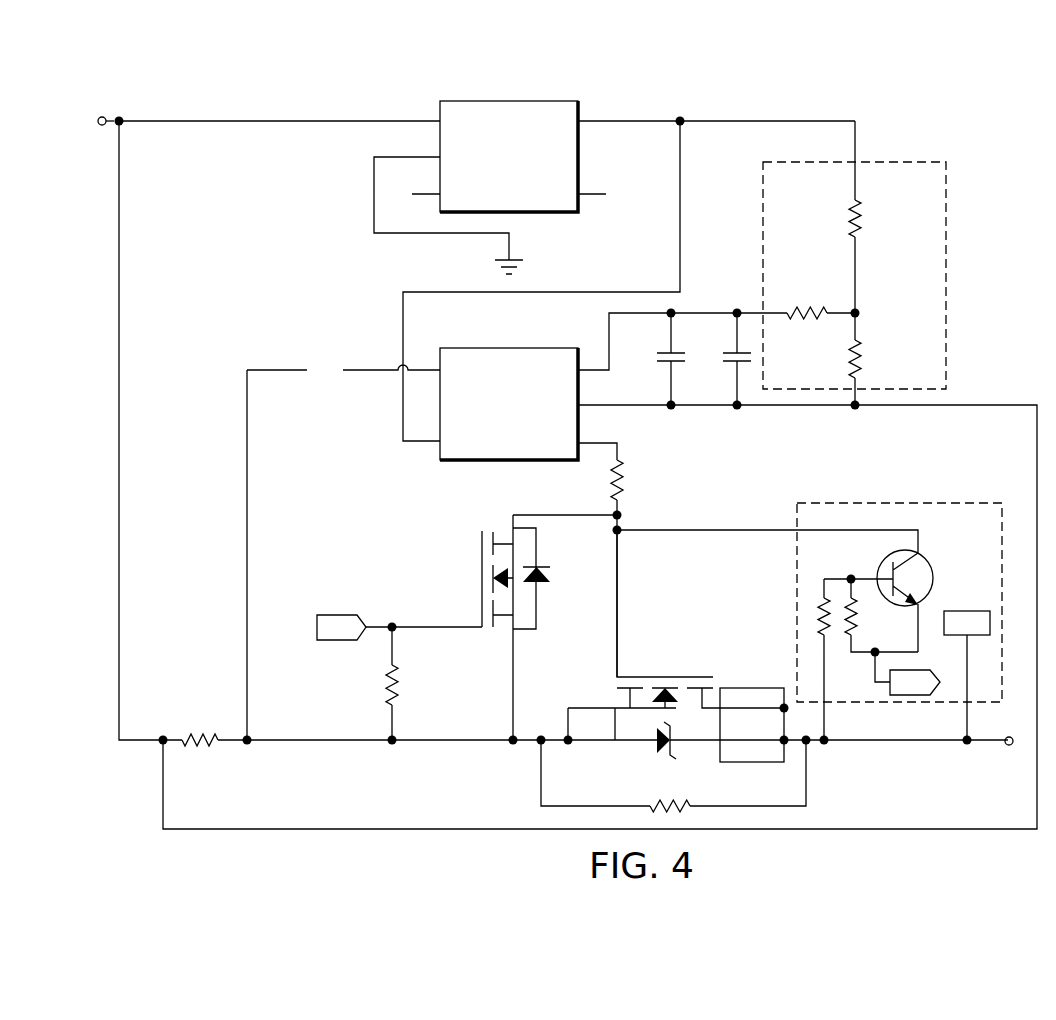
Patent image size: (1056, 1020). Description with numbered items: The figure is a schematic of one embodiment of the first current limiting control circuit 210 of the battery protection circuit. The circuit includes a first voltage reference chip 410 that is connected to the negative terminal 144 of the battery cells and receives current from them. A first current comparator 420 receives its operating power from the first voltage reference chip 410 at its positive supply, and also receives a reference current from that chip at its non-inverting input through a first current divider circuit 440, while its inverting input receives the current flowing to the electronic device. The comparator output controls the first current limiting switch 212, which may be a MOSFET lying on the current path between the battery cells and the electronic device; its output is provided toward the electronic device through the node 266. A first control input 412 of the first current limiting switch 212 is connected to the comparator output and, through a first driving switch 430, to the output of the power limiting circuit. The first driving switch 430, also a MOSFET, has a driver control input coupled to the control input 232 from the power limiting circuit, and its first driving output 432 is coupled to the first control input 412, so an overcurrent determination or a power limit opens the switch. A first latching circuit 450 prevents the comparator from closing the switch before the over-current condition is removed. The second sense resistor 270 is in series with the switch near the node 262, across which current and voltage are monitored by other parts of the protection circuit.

The first current limiting control circuit 210 is at (120, 100).
The negative terminal 144 is at (98, 121).
The first voltage reference chip 410 is at (580, 158).
The first current comparator 420 is at (511, 463).
The first driving output 432 is at (567, 514).
The first driving switch 430 is at (490, 533).
The first current divider circuit 440 is at (763, 278).
The first latching circuit 450 is at (900, 503).
The first control input 412 is at (618, 622).
The first control input 232 is at (317, 627).
The second sense resistor 270 is at (203, 734).
The node 262 is at (248, 746).
The first current limiting switch 212 is at (600, 745).
The node 266 is at (1010, 748).